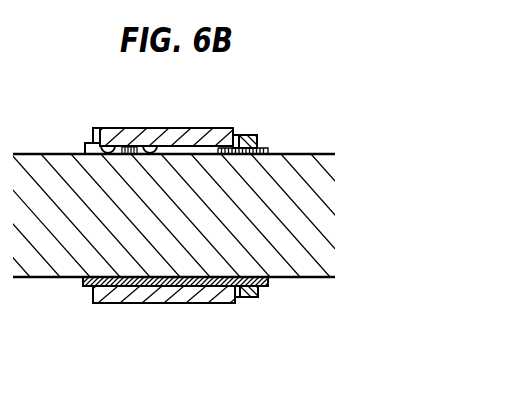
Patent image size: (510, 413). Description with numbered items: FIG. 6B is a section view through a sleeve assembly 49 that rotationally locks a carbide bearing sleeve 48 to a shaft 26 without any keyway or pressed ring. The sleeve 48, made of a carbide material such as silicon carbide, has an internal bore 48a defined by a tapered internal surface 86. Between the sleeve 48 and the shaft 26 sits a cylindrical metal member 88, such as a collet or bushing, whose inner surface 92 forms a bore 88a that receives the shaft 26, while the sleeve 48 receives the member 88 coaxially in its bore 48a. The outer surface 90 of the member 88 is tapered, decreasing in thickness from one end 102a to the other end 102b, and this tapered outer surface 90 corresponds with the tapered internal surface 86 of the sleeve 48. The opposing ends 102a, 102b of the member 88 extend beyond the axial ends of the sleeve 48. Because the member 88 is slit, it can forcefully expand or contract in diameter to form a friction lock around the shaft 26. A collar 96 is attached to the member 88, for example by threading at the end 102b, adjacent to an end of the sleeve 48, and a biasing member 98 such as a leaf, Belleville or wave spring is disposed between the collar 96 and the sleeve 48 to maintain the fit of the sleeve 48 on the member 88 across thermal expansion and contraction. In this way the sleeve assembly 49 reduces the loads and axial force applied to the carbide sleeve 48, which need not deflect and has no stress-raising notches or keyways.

The shaft 26 is at (190, 228).
The sleeve 48 is at (132, 304).
The internal bore 48a is at (97, 128).
The sleeve assembly 49 is at (237, 107).
The tapered internal surface 86 is at (155, 149).
The cylindrical member 88 is at (186, 282).
The bore 88a is at (88, 277).
The outer surface 90 is at (188, 148).
The inner surface 92 is at (107, 155).
The collar 96 is at (251, 298).
The biasing member 98 is at (238, 298).
The end of member 102a is at (84, 151).
The other end of member 102b is at (268, 151).